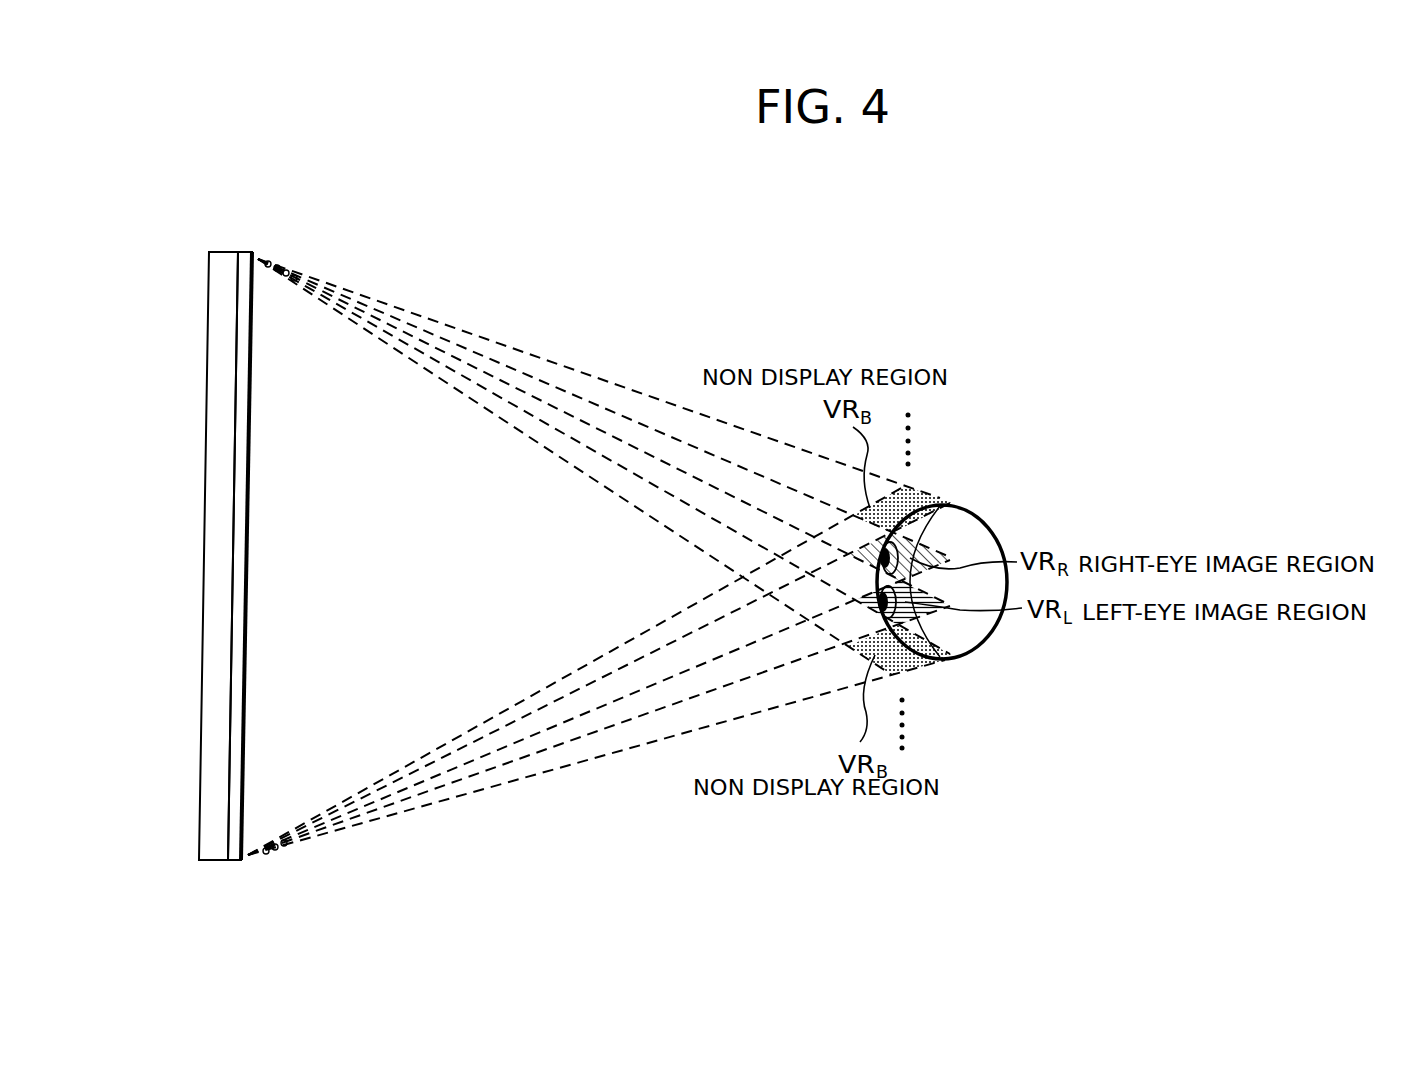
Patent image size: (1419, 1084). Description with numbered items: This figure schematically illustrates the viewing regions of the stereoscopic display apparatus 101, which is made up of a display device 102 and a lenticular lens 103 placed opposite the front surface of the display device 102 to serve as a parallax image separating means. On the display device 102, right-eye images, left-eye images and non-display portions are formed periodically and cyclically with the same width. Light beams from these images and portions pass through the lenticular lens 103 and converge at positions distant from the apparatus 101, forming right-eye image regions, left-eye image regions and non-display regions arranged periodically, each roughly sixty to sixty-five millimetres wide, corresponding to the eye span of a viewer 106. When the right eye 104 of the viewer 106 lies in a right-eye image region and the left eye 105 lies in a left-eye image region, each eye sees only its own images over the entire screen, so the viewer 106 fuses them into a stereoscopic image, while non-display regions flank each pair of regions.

The stereoscopic display apparatus 101 is at (469, 557).
The display device 102 is at (217, 847).
The lenticular lens 103 is at (245, 627).
The right eye 104 is at (900, 545).
The left eye 105 is at (905, 610).
The viewer 106 is at (1035, 608).